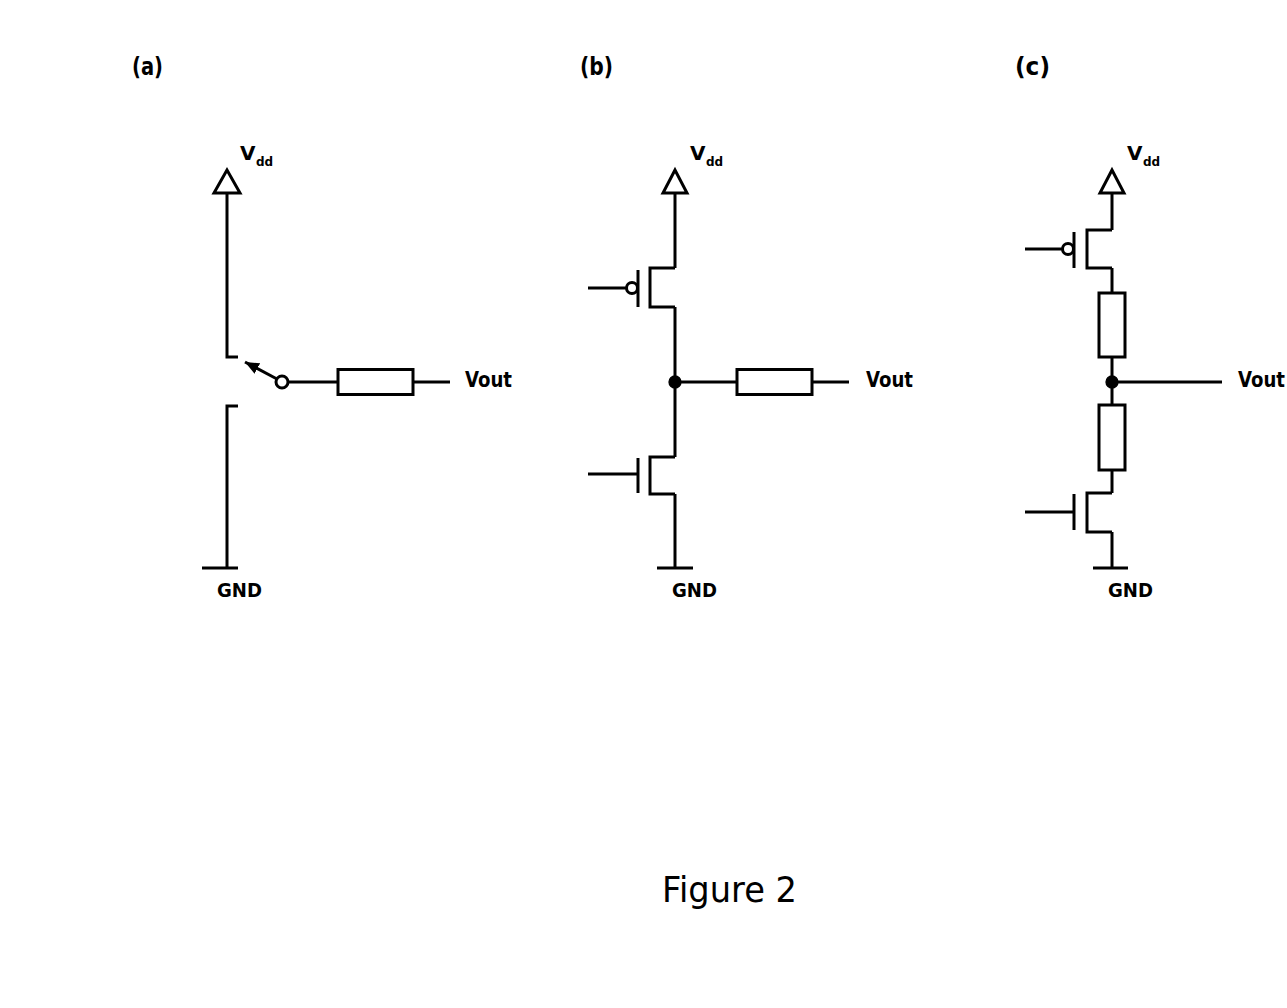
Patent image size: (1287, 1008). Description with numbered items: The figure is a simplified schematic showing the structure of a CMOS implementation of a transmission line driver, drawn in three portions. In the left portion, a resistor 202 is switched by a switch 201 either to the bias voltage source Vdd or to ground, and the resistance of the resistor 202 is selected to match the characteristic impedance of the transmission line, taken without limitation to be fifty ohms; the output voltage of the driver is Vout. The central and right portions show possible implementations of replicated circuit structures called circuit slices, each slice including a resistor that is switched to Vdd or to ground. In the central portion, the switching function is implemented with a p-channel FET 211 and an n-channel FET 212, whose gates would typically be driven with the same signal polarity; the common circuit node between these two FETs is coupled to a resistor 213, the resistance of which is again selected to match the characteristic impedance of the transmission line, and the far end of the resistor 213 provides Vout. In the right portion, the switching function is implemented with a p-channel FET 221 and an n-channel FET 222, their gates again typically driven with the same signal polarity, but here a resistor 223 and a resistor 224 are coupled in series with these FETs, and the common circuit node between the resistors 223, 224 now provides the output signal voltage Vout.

The switch 201 is at (277, 357).
The resistor 202 is at (377, 357).
The p-channel FET 211 is at (688, 282).
The n-channel FET 212 is at (688, 482).
The resistor 213 is at (788, 367).
The p-channel FET 221 is at (1125, 243).
The n-channel FET 222 is at (1125, 520).
The resistor 223 is at (1138, 318).
The resistor 224 is at (1138, 445).